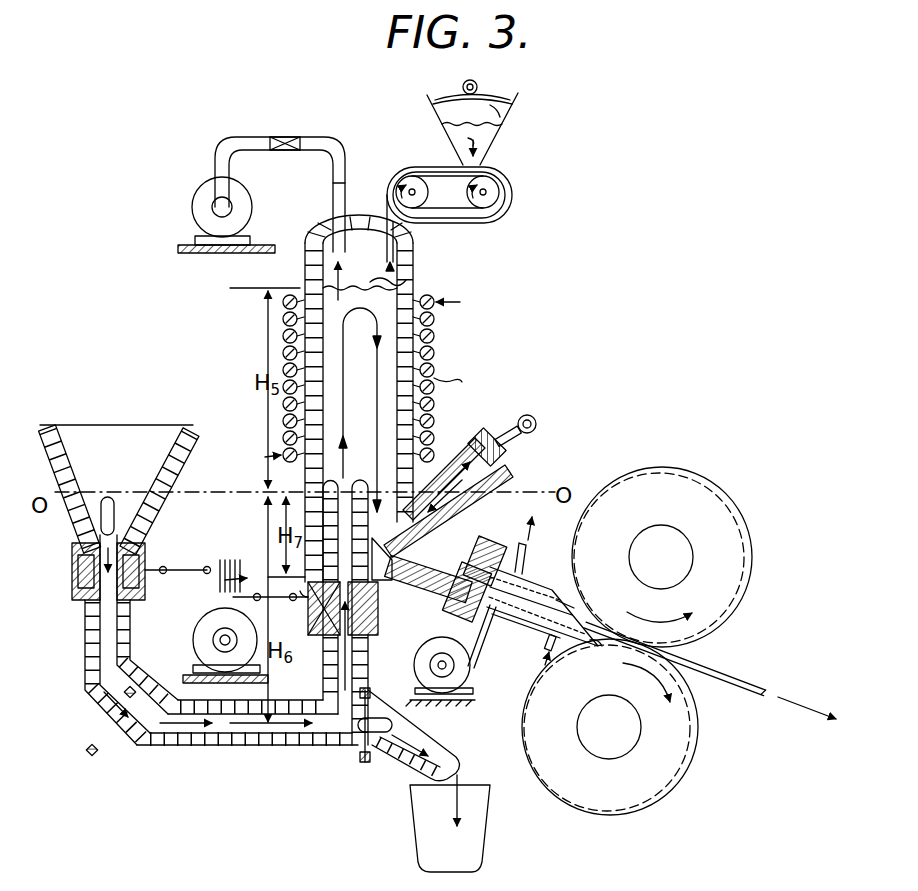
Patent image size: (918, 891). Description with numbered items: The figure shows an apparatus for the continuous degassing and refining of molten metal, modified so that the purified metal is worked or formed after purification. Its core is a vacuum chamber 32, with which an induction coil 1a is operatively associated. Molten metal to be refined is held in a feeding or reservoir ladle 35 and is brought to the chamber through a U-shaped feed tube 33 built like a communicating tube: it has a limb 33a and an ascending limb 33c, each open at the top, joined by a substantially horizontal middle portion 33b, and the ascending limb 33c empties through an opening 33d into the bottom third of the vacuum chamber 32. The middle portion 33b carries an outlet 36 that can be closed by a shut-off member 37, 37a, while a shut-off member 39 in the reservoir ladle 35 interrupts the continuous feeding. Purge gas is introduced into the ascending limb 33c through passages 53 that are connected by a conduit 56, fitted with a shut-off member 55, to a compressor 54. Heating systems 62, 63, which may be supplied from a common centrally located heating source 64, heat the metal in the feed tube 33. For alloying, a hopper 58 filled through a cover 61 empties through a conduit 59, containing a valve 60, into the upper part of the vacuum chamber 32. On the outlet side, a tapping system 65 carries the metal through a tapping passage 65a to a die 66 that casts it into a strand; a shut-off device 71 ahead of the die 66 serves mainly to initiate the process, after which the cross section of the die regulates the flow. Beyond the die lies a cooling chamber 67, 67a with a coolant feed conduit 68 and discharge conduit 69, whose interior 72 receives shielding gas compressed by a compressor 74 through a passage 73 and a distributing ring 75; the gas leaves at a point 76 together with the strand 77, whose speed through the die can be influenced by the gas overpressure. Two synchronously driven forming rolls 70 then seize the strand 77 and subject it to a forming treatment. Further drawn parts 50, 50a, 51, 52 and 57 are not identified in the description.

The induction coil 1a is at (461, 380).
The vacuum chamber 32 is at (432, 349).
The feed tube 33 is at (130, 631).
The limb 33a is at (132, 540).
The middle portion 33b is at (226, 748).
The ascending limb 33c is at (279, 564).
The opening 33d is at (395, 445).
The reservoir ladle 35 is at (129, 424).
The outlet 36 is at (443, 741).
The shut-off member 37 is at (352, 748).
The shut-off member 37a is at (390, 728).
The shut-off member 39 is at (140, 497).
The pump 50 is at (206, 194).
The valve 50a is at (292, 130).
The pipe 51 is at (345, 162).
The column vessel 52 is at (402, 267).
The passages 53 is at (378, 614).
The compressor 54 is at (196, 634).
The shut-off member 55 is at (324, 610).
The conduit 56 is at (320, 628).
The receptacle 57 is at (420, 834).
The hopper 58 is at (496, 143).
The conduit 59 is at (435, 167).
The valve 60 is at (399, 226).
The cover 61 is at (513, 118).
The heating system 62 is at (148, 580).
The heating system 63 is at (302, 594).
The heating source 64 is at (210, 588).
The tapping system 65 is at (430, 570).
The tapping passage 65a is at (457, 602).
The die 66 is at (486, 556).
The cooling chamber 67 is at (525, 589).
The cooling chamber 67a is at (512, 618).
The feed conduit 68 is at (555, 656).
The discharge conduit 69 is at (511, 537).
The forming rolls 70 is at (736, 577).
The shut-off device 71 is at (396, 546).
The cooling chamber 72 is at (564, 593).
The passage 73 is at (480, 628).
The compressor 74 is at (414, 663).
The distributing ring 75 is at (528, 570).
The point 76 is at (600, 638).
The strand 77 is at (740, 678).